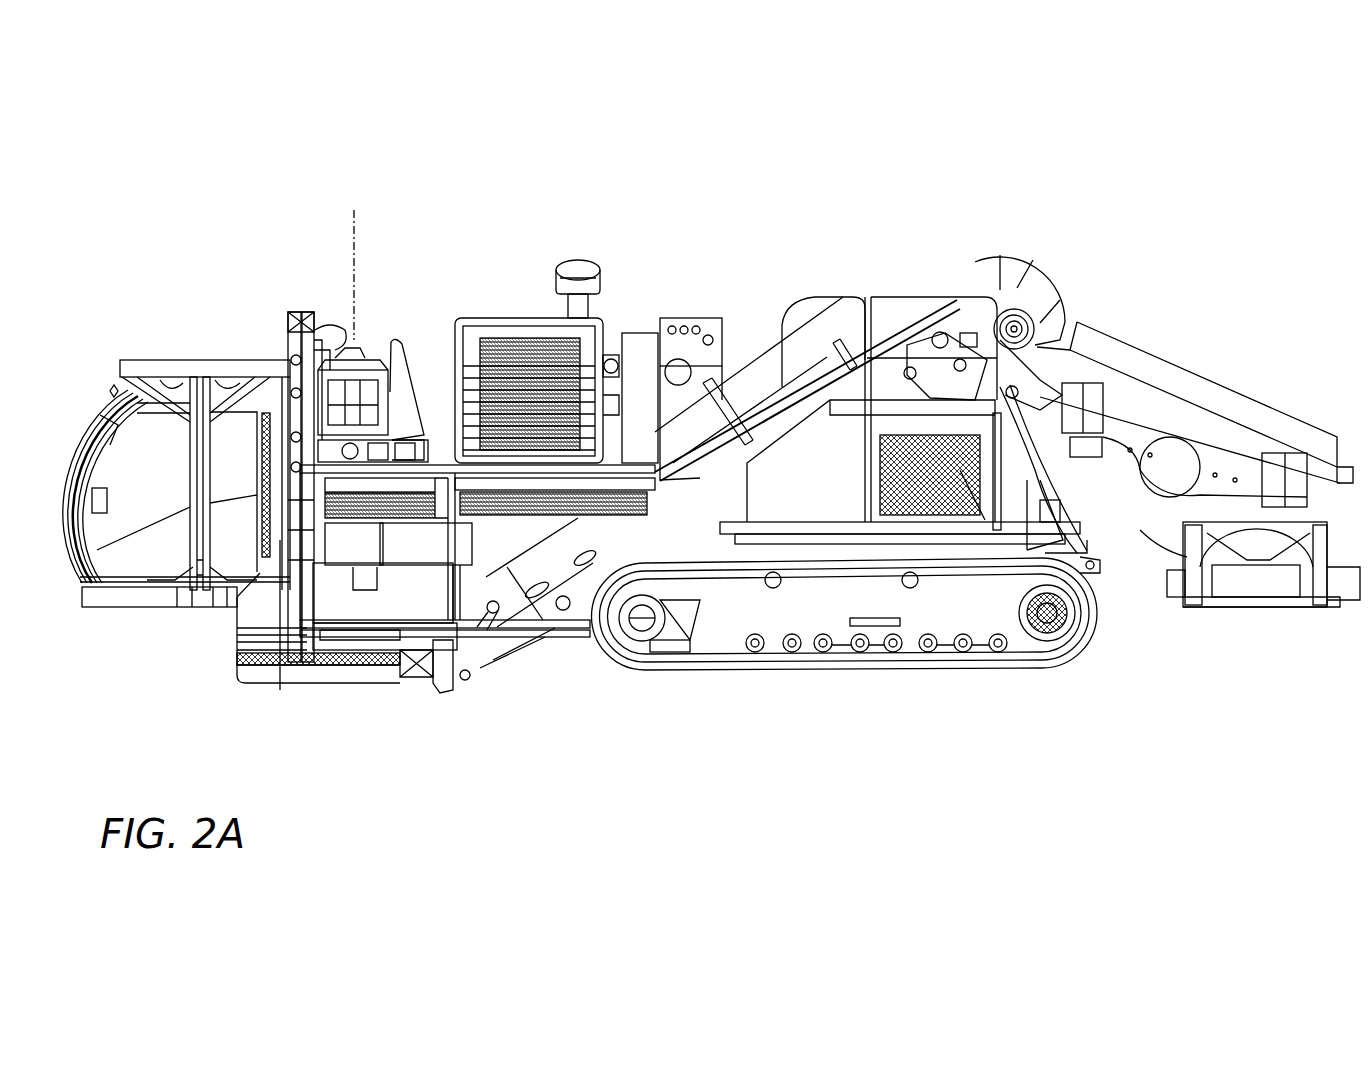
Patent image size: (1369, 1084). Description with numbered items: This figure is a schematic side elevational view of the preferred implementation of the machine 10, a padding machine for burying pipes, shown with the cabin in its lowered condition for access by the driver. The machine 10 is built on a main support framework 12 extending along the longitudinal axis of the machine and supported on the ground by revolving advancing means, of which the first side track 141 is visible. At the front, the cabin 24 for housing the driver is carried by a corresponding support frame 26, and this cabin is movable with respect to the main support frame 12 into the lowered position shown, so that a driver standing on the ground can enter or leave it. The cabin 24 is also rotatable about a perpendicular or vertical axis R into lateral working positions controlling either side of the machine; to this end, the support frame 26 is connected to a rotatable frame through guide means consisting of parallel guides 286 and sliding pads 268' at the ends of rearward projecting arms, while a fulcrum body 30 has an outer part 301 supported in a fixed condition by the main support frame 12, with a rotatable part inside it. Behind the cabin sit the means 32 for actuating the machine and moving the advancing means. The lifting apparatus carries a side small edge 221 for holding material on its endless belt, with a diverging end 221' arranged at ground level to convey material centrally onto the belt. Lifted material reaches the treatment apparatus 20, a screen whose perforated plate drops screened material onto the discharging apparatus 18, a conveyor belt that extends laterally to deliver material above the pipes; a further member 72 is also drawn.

The machine 10 is at (276, 211).
The cabin 24 is at (86, 410).
The support frame 26 is at (226, 350).
The parallel guides 286 is at (347, 340).
The sliding pads 268' is at (307, 297).
The axis of rotation R is at (355, 226).
The fulcrum body 30 is at (336, 397).
The outer part of fulcrum body 301 is at (378, 390).
The actuation apparatus 32 is at (494, 318).
The side small edge 221 is at (867, 399).
The conveyor support strut 72 is at (890, 285).
The treatment apparatus 20 is at (1212, 352).
The discharging apparatus 18 is at (1267, 622).
The first side track 141 is at (875, 672).
The main support framework 12 is at (565, 650).
The end of side small edge 221' is at (295, 625).